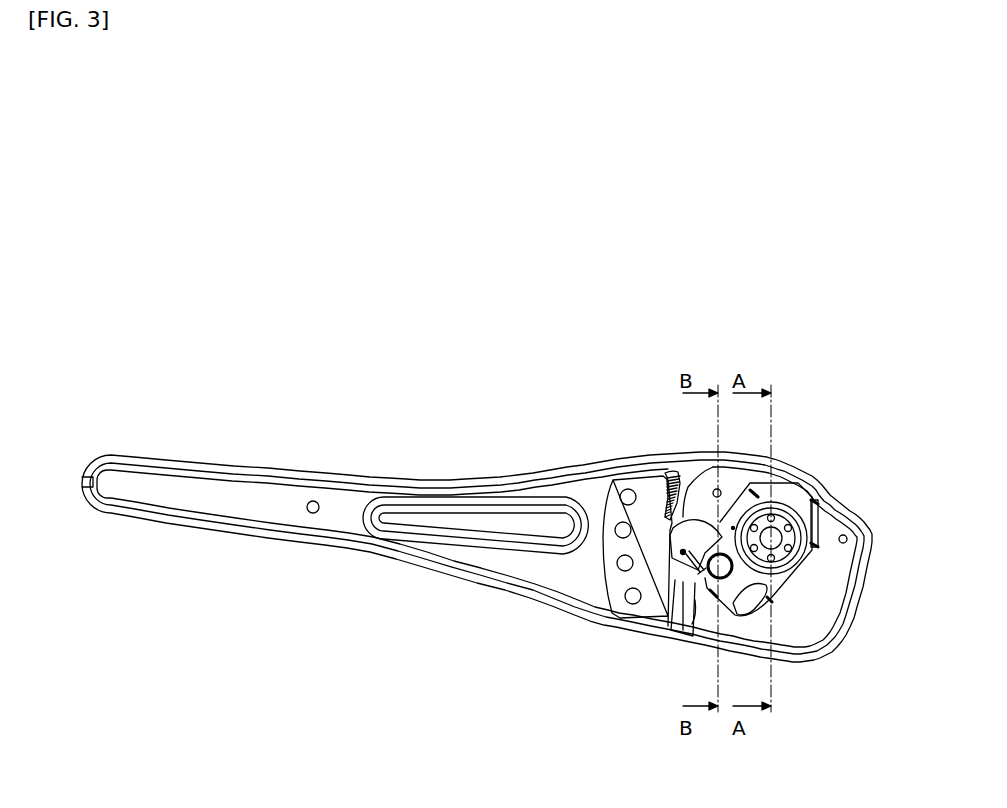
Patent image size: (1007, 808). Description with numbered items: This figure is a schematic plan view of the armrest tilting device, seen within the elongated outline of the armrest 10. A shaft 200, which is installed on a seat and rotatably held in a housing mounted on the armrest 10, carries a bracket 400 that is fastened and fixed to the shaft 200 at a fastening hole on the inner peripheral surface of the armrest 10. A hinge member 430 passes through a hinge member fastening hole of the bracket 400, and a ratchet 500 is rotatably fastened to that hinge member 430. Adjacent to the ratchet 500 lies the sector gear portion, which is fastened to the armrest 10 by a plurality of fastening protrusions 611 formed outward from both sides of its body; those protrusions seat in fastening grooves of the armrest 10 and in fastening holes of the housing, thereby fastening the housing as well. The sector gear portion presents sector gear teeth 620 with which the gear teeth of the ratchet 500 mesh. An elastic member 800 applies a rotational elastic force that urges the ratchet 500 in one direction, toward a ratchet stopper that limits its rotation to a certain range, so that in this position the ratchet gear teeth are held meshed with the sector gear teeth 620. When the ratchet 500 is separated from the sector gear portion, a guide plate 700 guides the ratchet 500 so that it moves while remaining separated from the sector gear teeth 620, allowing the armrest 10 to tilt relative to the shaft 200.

The armrest 10 is at (375, 476).
The shaft 200 is at (790, 535).
The bracket 400 is at (792, 488).
The hinge member 430 is at (777, 563).
The ratchet 500 is at (650, 523).
The fastening protrusions 611 is at (633, 607).
The sector gear teeth 620 is at (668, 495).
The guide plate 700 is at (617, 612).
The elastic member 800 is at (688, 637).